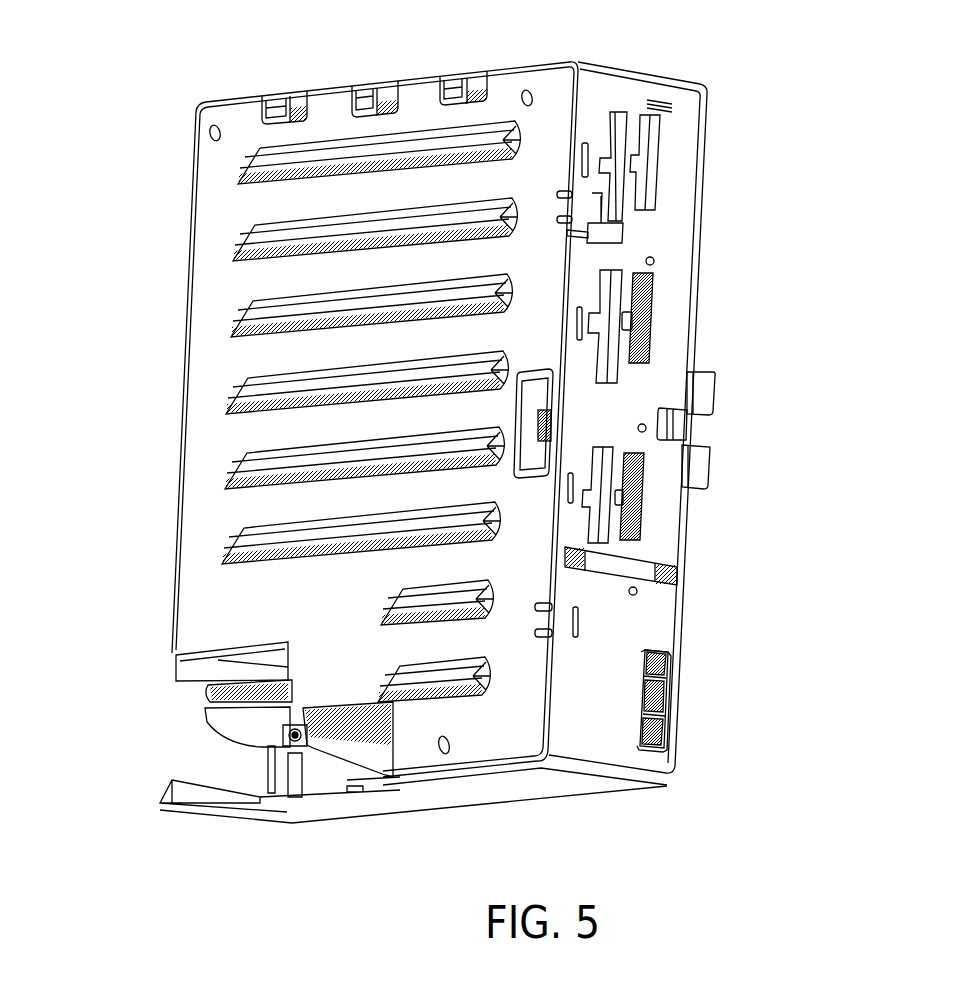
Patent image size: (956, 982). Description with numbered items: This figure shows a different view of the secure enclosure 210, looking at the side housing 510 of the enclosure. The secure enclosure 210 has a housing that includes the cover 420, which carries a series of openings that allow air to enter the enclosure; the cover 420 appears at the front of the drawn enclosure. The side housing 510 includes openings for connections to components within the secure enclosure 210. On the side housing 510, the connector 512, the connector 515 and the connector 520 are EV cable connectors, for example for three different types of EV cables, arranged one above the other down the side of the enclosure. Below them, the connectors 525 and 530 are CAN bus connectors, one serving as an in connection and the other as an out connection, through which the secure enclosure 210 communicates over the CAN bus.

The secure enclosure 210 is at (191, 163).
The side housing 510 is at (570, 421).
The connector 512 is at (657, 166).
The connector 515 is at (653, 297).
The connector 520 is at (645, 477).
The connector 525 is at (672, 706).
The connector 530 is at (674, 740).
The cover 420 is at (472, 744).